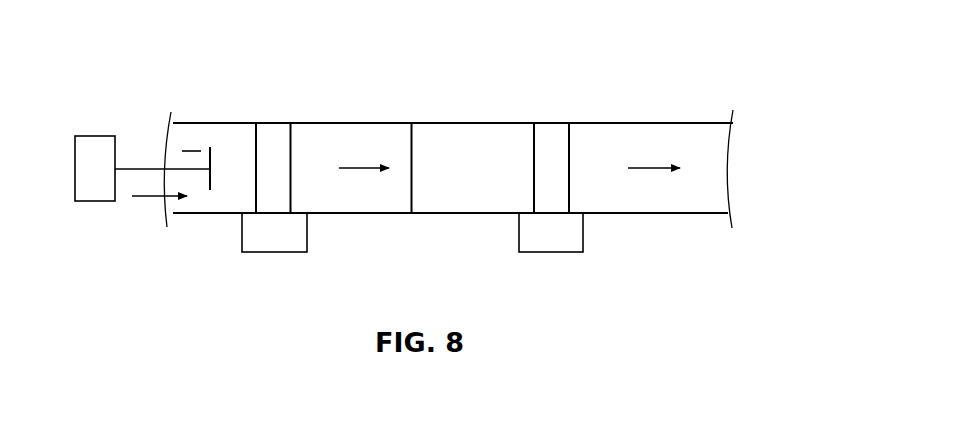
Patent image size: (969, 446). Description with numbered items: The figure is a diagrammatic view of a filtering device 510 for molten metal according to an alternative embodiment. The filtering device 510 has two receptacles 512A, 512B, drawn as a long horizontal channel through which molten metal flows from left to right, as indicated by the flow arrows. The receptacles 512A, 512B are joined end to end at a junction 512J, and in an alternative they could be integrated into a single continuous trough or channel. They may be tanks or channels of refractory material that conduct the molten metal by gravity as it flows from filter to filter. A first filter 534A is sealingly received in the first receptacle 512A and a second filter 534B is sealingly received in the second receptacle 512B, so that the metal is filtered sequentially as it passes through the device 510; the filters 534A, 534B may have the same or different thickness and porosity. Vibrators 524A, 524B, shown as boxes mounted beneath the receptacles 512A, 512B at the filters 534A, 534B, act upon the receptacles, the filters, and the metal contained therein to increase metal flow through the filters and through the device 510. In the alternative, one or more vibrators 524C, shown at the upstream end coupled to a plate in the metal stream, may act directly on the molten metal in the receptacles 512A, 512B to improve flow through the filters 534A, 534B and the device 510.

The filtering device 510 is at (763, 73).
The first receptacle 512A is at (225, 122).
The second receptacle 512B is at (662, 122).
The junction 512J is at (413, 136).
The first vibrator 524A is at (275, 242).
The second vibrator 524B is at (553, 239).
The vibrator 524C is at (102, 147).
The first filter 534A is at (287, 140).
The second filter 534B is at (560, 156).